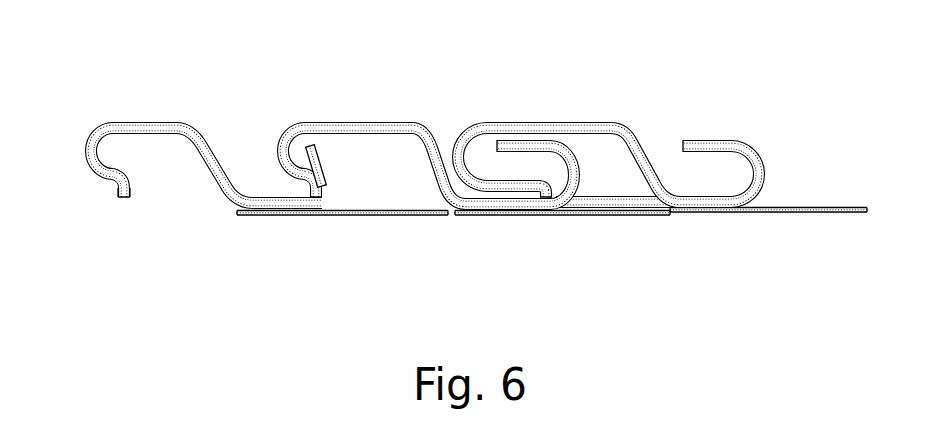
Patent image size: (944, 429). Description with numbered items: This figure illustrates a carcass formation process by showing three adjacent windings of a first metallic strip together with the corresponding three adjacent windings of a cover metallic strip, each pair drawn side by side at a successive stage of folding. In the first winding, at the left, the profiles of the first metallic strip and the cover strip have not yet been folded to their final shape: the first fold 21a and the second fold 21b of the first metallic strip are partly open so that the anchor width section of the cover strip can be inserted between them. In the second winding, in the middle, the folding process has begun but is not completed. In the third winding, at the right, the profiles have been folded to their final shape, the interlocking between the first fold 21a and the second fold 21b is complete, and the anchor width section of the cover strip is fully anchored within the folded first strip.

The first fold 21a is at (96, 181).
The second fold 21b is at (337, 162).